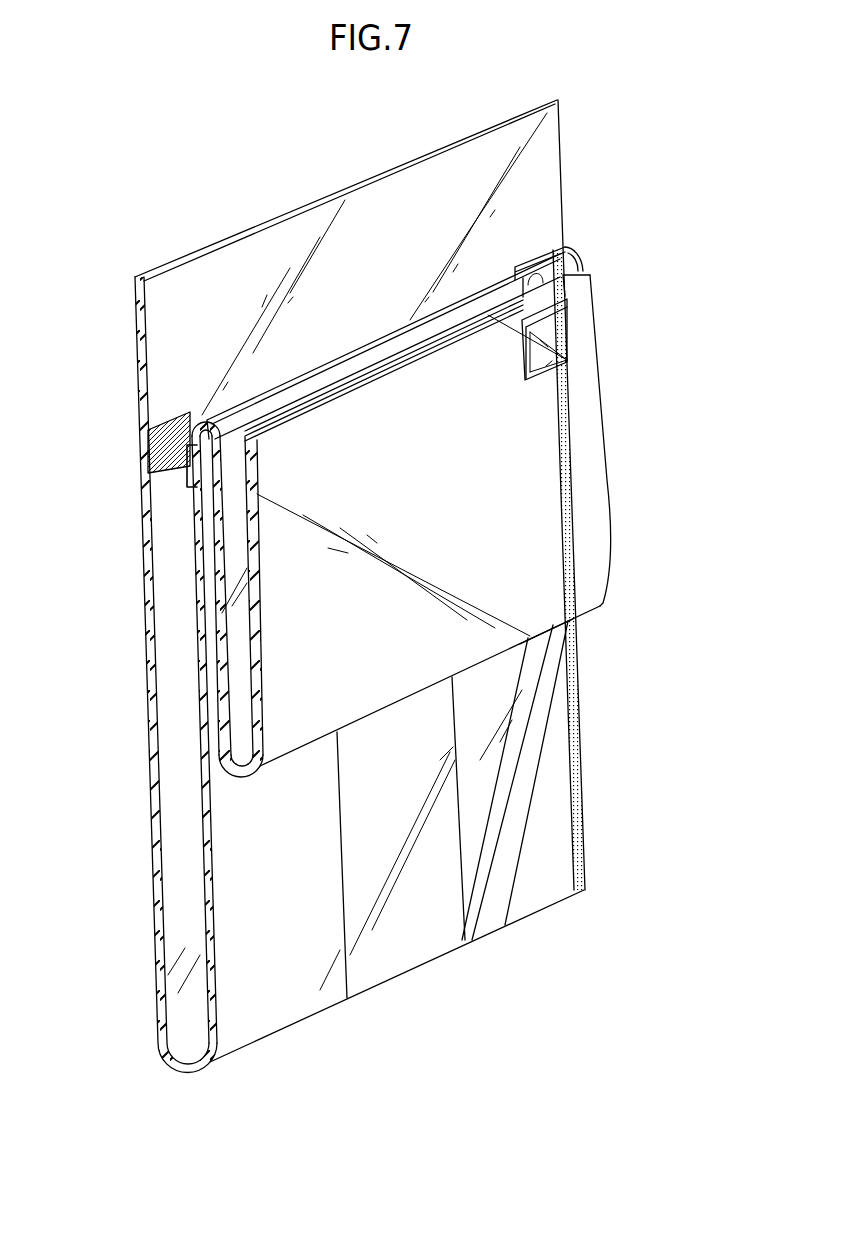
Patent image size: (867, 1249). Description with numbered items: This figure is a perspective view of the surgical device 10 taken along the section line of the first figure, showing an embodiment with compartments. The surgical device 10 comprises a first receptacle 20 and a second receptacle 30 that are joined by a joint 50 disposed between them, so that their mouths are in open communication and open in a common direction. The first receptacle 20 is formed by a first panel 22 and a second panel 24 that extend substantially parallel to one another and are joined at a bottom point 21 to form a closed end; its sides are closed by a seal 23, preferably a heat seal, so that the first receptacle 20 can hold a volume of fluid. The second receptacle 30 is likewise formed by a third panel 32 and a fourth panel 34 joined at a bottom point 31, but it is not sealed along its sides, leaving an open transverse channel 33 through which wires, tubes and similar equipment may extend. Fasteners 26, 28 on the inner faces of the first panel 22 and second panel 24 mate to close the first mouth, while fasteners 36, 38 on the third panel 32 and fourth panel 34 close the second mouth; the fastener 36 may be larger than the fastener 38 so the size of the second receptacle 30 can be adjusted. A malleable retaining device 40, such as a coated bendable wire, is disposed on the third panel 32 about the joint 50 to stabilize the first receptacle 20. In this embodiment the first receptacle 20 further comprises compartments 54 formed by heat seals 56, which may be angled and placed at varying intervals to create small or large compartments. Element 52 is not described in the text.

The surgical device 10 is at (576, 74).
The first receptacle 20 is at (388, 960).
The bottom point 21 is at (277, 1033).
The first panel 22 is at (153, 812).
The seal 23 is at (577, 770).
The second panel 24 is at (205, 729).
The fastener 26 is at (151, 436).
The fastener 28 is at (197, 473).
The second receptacle 30 is at (530, 528).
The bottom point 31 is at (487, 660).
The third panel 32 is at (213, 636).
The open transverse channel 33 is at (230, 578).
The fourth panel 34 is at (253, 558).
The fastener 36 is at (560, 362).
The fastener 38 is at (597, 308).
The retaining device 40 is at (517, 267).
The joint 50 is at (357, 343).
The sleeve 52 is at (585, 255).
The compartments 54 is at (537, 731).
The heat seals 56 is at (460, 882).